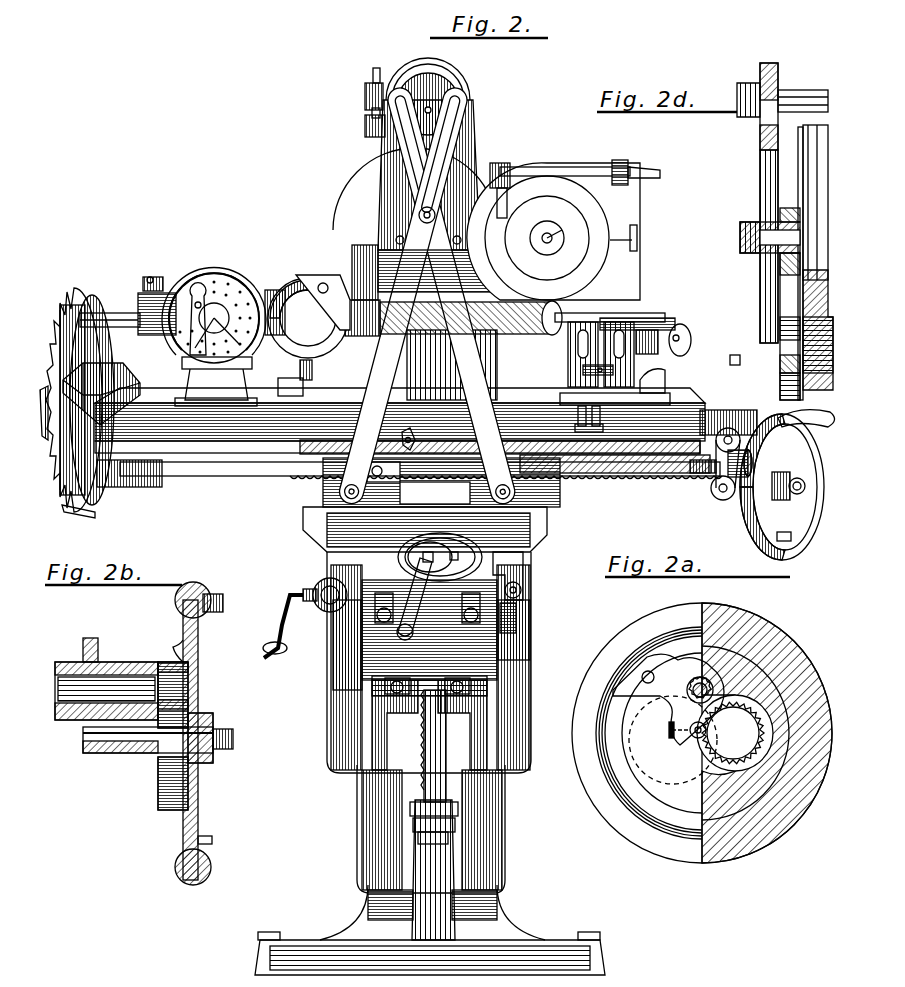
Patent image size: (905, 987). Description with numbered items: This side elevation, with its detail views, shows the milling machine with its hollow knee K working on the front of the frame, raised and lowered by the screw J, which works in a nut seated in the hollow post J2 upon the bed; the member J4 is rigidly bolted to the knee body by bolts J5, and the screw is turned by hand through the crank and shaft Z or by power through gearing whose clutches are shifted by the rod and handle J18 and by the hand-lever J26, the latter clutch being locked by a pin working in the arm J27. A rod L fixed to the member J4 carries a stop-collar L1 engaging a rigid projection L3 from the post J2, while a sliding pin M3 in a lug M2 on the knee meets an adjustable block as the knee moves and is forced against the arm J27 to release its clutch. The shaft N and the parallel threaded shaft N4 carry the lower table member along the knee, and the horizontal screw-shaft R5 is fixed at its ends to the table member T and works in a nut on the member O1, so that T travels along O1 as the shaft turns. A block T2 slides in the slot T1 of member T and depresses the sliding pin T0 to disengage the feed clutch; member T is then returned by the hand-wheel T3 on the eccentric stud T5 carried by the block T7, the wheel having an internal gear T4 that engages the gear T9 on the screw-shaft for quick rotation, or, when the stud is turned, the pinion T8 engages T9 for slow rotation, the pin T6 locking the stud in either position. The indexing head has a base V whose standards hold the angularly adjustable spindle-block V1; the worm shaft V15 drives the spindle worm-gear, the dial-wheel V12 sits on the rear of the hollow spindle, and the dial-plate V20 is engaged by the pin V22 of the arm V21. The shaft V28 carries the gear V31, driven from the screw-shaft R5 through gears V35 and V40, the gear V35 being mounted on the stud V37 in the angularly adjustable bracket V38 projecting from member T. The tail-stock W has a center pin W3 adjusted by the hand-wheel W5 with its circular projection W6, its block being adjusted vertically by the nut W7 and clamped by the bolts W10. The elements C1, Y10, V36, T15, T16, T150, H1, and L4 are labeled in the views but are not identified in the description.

In FIG. 2, the crossed swinging arms C1 is at (452, 106).
In FIG. 2, the bearing block Y10 is at (362, 250).
In FIG. 2, the base V is at (267, 379).
In FIG. 2, the spindle-block V1 is at (292, 280).
In FIG. 2, the dial-wheel V12 is at (216, 274).
In FIG. 2, the worm shaft V15 is at (355, 335).
In FIG. 2, the dial-plate V20 is at (270, 290).
In FIG. 2, the arm V21 is at (196, 280).
In FIG. 2, the pin V22 is at (160, 338).
In FIG. 2, the shaft V28 is at (116, 316).
In FIG. 2D, the shaft V28 is at (824, 94).
In FIG. 2, the gear V31 is at (78, 298).
In FIG. 2D, the gear V31 is at (776, 191).
In FIG. 2, the gear V35 is at (47, 385).
In FIG. 2D, the gear V35 is at (765, 150).
In FIG. 2D, the collar V36 is at (790, 212).
In FIG. 2D, the stud V37 is at (742, 236).
In FIG. 2, the angularly-adjustable bracket V38 is at (130, 380).
In FIG. 2D, the angularly-adjustable bracket V38 is at (810, 162).
In FIG. 2, the gear V40 is at (85, 512).
In FIG. 2D, the gear V40 is at (790, 326).
In FIG. 2, the screw-shaft R5 is at (236, 478).
In FIG. 2B, the screw-shaft R5 is at (60, 718).
In FIG. 2A, the screw-shaft R5 is at (770, 625).
In FIG. 2, the knee K is at (312, 540).
In FIG. 2, the table member T is at (426, 420).
In FIG. 2, the sliding pin T0 is at (405, 427).
In FIG. 2, the slot T1 is at (578, 419).
In FIG. 2, the block T2 is at (500, 434).
In FIG. 2, the hand-wheel T3 is at (808, 535).
In FIG. 2B, the hand-wheel T3 is at (180, 615).
In FIG. 2B, the internal gear T4 is at (162, 808).
In FIG. 2A, the internal gear T4 is at (735, 736).
In FIG. 2A, the stud T5 is at (698, 735).
In FIG. 2, the pin T6 is at (735, 500).
In FIG. 2B, the pin T6 is at (165, 760).
In FIG. 2, the block T7 is at (712, 480).
In FIG. 2B, the block T7 is at (88, 752).
In FIG. 2A, the pinion T8 is at (708, 732).
In FIG. 2B, the gear T9 is at (188, 668).
In FIG. 2A, the gear T9 is at (712, 700).
In FIG. 2, the hand wheel shaft T15 is at (656, 489).
In FIG. 2B, the hand wheel shaft T15 is at (108, 752).
In FIG. 2A, the ratchet T16 is at (690, 735).
In FIG. 2, the shaft collar T150 is at (698, 472).
In FIG. 2, the table member O1 is at (441, 482).
In FIG. 2, the tail-stock W is at (636, 372).
In FIG. 2, the center pin W3 is at (645, 320).
In FIG. 2, the hand-wheel W5 is at (691, 340).
In FIG. 2, the circular projection W6 is at (660, 350).
In FIG. 2, the nut W7 is at (668, 385).
In FIG. 2, the bolts W10 is at (583, 370).
In FIG. 2, the shaft N is at (420, 560).
In FIG. 2, the threaded shaft N4 is at (460, 556).
In FIG. 2, the crank and shaft Z is at (290, 596).
In FIG. 2, the screw J is at (420, 756).
In FIG. 2, the hollow post J2 is at (370, 905).
In FIG. 2, the member J4 is at (400, 700).
In FIG. 2, the bolts J5 is at (392, 690).
In FIG. 2, the rod and handle J18 is at (362, 635).
In FIG. 2, the hand-lever J26 is at (515, 640).
In FIG. 2, the arm J27 is at (525, 582).
In FIG. 2, the lug M2 is at (522, 590).
In FIG. 2, the sliding pin M3 is at (518, 612).
In FIG. 2, the feed screw H1 is at (420, 770).
In FIG. 2, the rod L is at (415, 800).
In FIG. 2, the stop-collar L1 is at (455, 802).
In FIG. 2, the rigid projection L3 is at (450, 822).
In FIG. 2, the elevating screw L4 is at (450, 840).